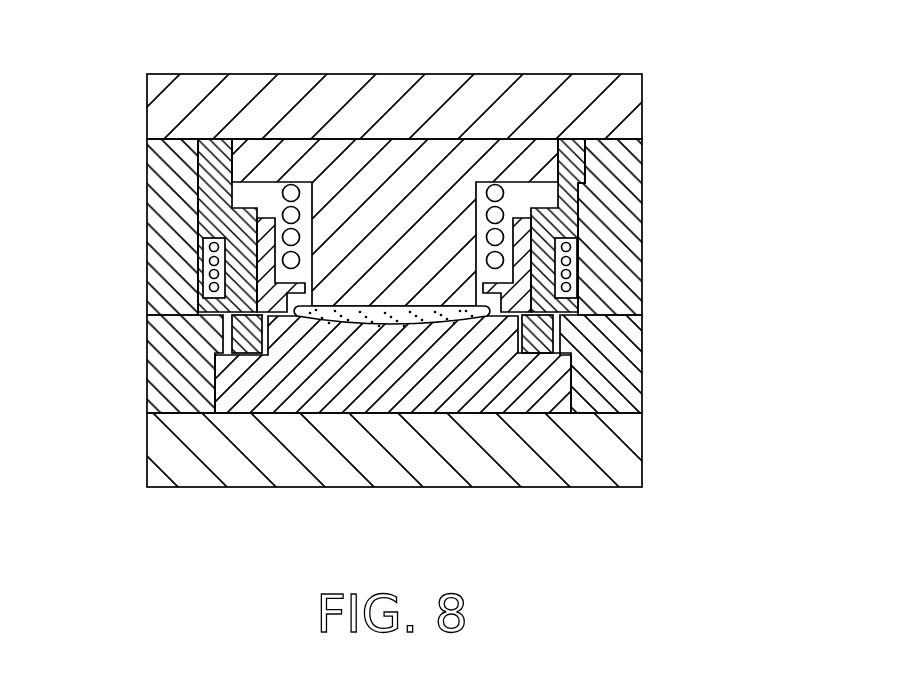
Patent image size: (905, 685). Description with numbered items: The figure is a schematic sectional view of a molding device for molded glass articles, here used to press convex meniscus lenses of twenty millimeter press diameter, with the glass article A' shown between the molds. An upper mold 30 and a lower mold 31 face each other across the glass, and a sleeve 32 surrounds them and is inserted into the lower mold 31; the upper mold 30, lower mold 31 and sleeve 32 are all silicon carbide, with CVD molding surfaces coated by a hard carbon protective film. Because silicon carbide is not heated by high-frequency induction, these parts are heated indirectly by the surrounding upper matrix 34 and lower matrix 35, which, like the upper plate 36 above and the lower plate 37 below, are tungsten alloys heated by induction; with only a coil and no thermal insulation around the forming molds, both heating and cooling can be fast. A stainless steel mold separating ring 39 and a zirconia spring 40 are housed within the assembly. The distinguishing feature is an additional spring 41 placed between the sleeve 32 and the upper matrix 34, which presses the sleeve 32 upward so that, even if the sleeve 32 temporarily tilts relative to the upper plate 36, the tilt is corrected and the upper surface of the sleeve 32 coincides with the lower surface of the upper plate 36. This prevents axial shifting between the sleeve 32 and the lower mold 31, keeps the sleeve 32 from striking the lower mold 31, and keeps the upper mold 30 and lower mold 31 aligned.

The upper mold 30 is at (474, 168).
The lower mold 31 is at (475, 383).
The sleeve 32 is at (273, 297).
The upper matrix 34 is at (180, 176).
The lower matrix 35 is at (187, 397).
The upper plate 36 is at (344, 117).
The lower plate 37 is at (183, 452).
The mold separating ring 39 is at (233, 316).
The spring 40 is at (290, 216).
The spring 41 is at (202, 272).
The lens blank A' is at (392, 434).